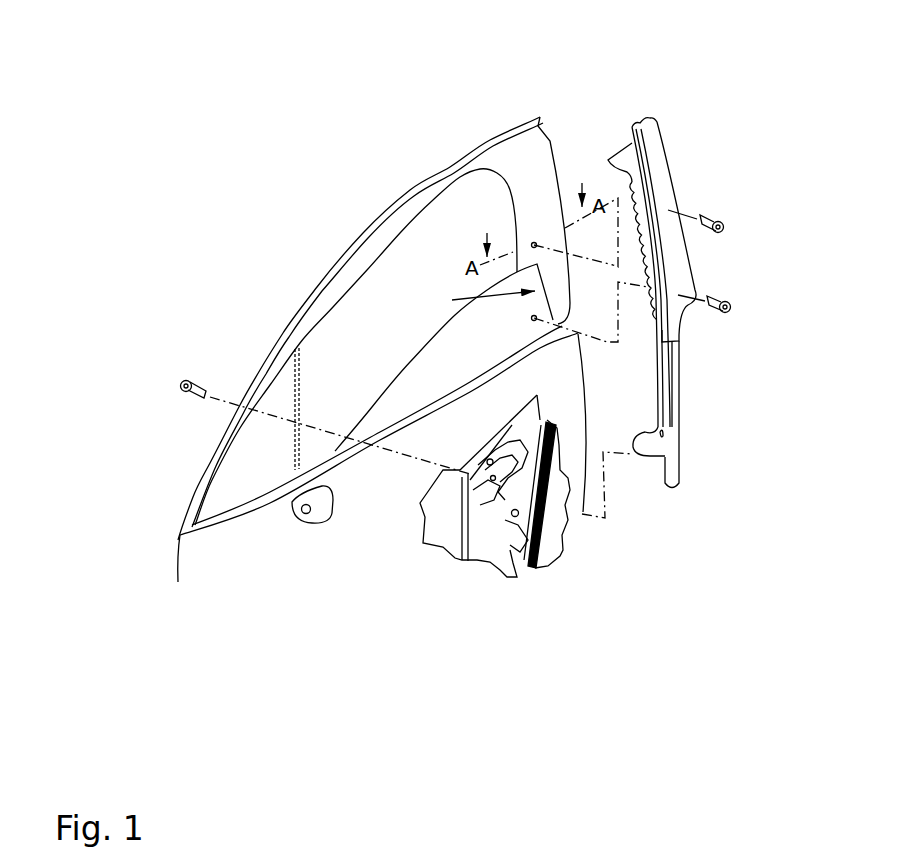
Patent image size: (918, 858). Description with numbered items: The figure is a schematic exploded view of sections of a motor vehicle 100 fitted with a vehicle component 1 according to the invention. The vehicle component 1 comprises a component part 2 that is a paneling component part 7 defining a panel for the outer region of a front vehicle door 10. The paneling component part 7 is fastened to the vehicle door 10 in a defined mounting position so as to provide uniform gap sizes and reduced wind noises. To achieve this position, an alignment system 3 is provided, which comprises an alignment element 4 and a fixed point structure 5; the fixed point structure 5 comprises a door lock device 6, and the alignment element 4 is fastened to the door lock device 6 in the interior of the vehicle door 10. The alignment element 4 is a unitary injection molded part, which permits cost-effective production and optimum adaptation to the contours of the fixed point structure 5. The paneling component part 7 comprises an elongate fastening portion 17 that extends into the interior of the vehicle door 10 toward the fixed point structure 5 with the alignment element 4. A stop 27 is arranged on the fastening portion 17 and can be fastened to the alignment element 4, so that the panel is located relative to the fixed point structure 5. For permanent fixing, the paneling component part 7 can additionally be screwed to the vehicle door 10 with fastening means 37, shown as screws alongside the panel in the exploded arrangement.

The vehicle component 1 is at (245, 100).
The motor vehicle 100 is at (228, 226).
The front vehicle door 10 is at (461, 145).
The component part 2 is at (700, 265).
The paneling component part 7 is at (655, 148).
The fastening portion 17 is at (667, 376).
The stop 27 is at (656, 443).
The fastening means 37 is at (724, 222).
The alignment system 3 is at (580, 521).
The alignment element 4 is at (502, 510).
The fixed point structure 5 is at (530, 555).
The door lock device 6 is at (517, 528).